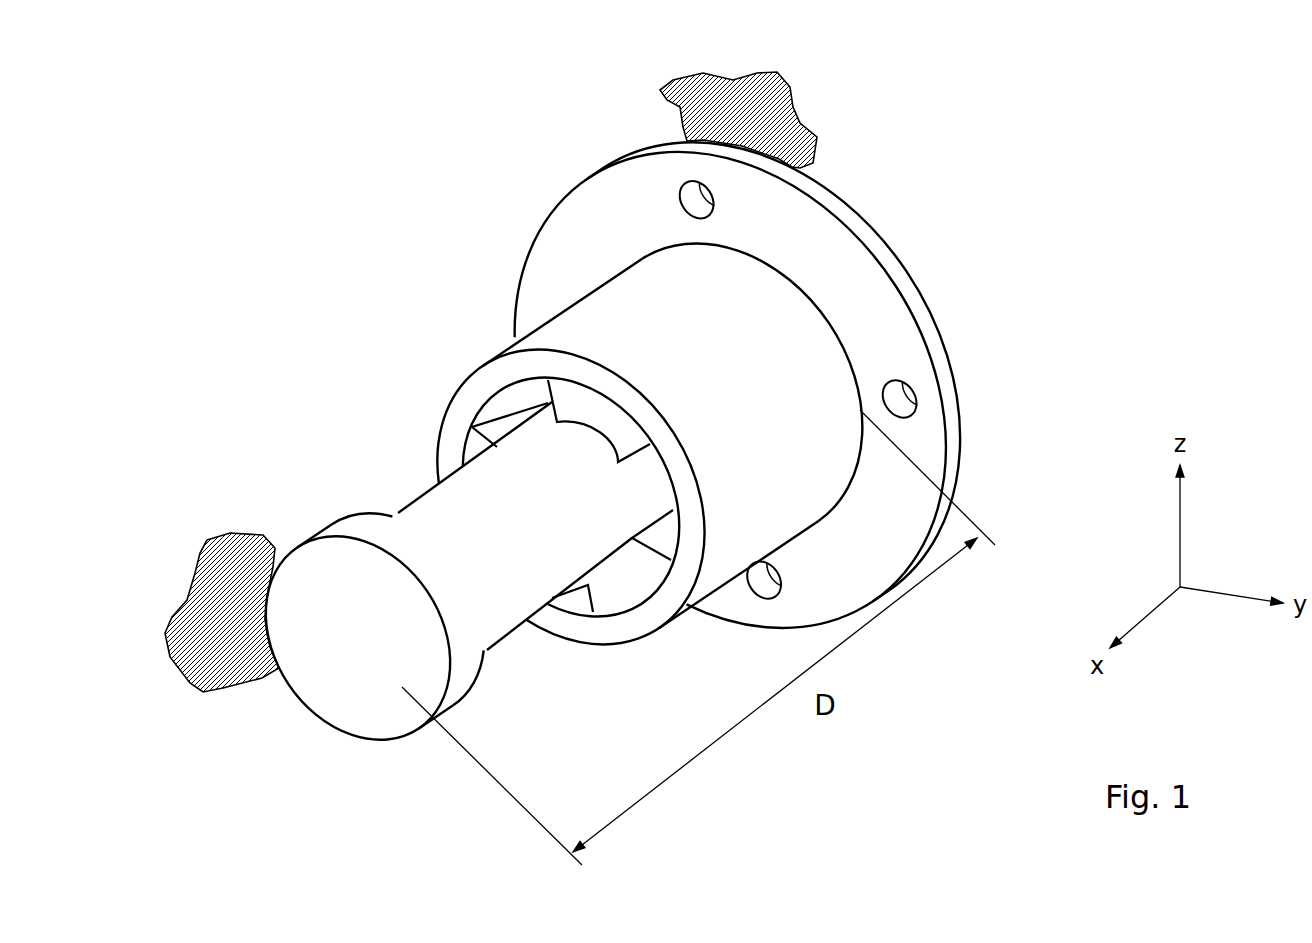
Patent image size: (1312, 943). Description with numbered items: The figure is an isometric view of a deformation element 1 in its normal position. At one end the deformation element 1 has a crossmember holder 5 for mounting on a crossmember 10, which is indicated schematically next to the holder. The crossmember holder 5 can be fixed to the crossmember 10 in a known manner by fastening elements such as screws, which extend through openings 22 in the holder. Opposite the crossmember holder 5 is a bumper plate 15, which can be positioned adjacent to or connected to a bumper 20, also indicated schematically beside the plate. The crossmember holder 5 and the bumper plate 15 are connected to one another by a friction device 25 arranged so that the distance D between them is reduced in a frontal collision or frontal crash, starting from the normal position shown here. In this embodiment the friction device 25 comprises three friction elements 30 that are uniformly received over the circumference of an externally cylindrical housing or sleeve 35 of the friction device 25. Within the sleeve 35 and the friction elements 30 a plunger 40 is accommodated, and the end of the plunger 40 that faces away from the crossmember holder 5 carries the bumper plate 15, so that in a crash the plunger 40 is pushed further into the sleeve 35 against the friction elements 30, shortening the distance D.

The deformation element 1 is at (1045, 170).
The crossmember holder 5 is at (643, 228).
The crossmember 10 is at (747, 118).
The bumper plate 15 is at (330, 598).
The bumper 20 is at (212, 598).
The openings 22 is at (814, 390).
The friction device 25 is at (420, 385).
The friction elements 30 is at (645, 583).
The sleeve 35 is at (662, 312).
The plunger 40 is at (473, 533).